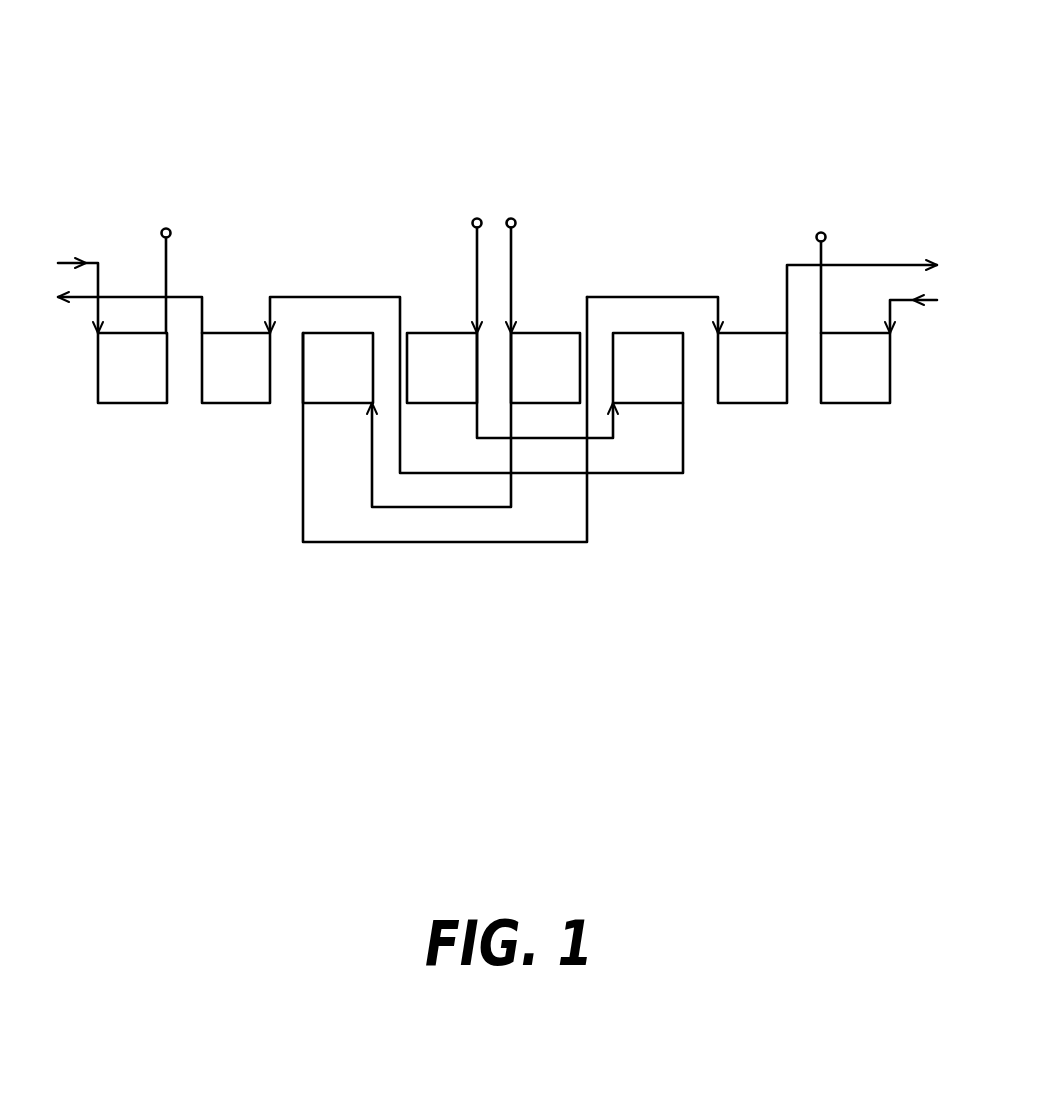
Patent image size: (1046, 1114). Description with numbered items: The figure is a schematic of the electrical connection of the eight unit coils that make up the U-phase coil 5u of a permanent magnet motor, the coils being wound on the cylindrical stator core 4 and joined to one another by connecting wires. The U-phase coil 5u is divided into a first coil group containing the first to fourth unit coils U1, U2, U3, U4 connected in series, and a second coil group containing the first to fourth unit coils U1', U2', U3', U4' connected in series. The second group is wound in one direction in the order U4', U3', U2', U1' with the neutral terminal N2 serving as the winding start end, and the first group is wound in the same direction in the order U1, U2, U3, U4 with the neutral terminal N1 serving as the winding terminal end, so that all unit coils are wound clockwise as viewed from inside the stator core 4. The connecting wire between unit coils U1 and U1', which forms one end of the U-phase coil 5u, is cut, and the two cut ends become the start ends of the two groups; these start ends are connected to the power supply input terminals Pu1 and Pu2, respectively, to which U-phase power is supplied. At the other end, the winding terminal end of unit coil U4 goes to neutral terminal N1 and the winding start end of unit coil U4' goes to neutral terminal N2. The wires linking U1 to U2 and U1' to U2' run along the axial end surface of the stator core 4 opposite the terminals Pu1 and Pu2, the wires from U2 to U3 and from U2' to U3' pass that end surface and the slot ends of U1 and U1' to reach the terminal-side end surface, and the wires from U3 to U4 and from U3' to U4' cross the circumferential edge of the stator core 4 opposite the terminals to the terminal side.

The U-phase coil 5u is at (641, 150).
The stator core 4 is at (389, 345).
The neutral terminal N1 is at (822, 232).
The neutral terminal N2 is at (167, 228).
The power supply input terminal Pu1 is at (477, 218).
The power supply input terminal Pu2 is at (511, 218).
The first unit coil U1 is at (442, 329).
The first unit coil U1' is at (545, 329).
The second unit coil U2 is at (648, 323).
The second unit coil U2' is at (338, 310).
The third unit coil U3 is at (236, 317).
The third unit coil U3' is at (752, 320).
The fourth unit coil U4 is at (855, 413).
The fourth unit coil U4' is at (132, 408).